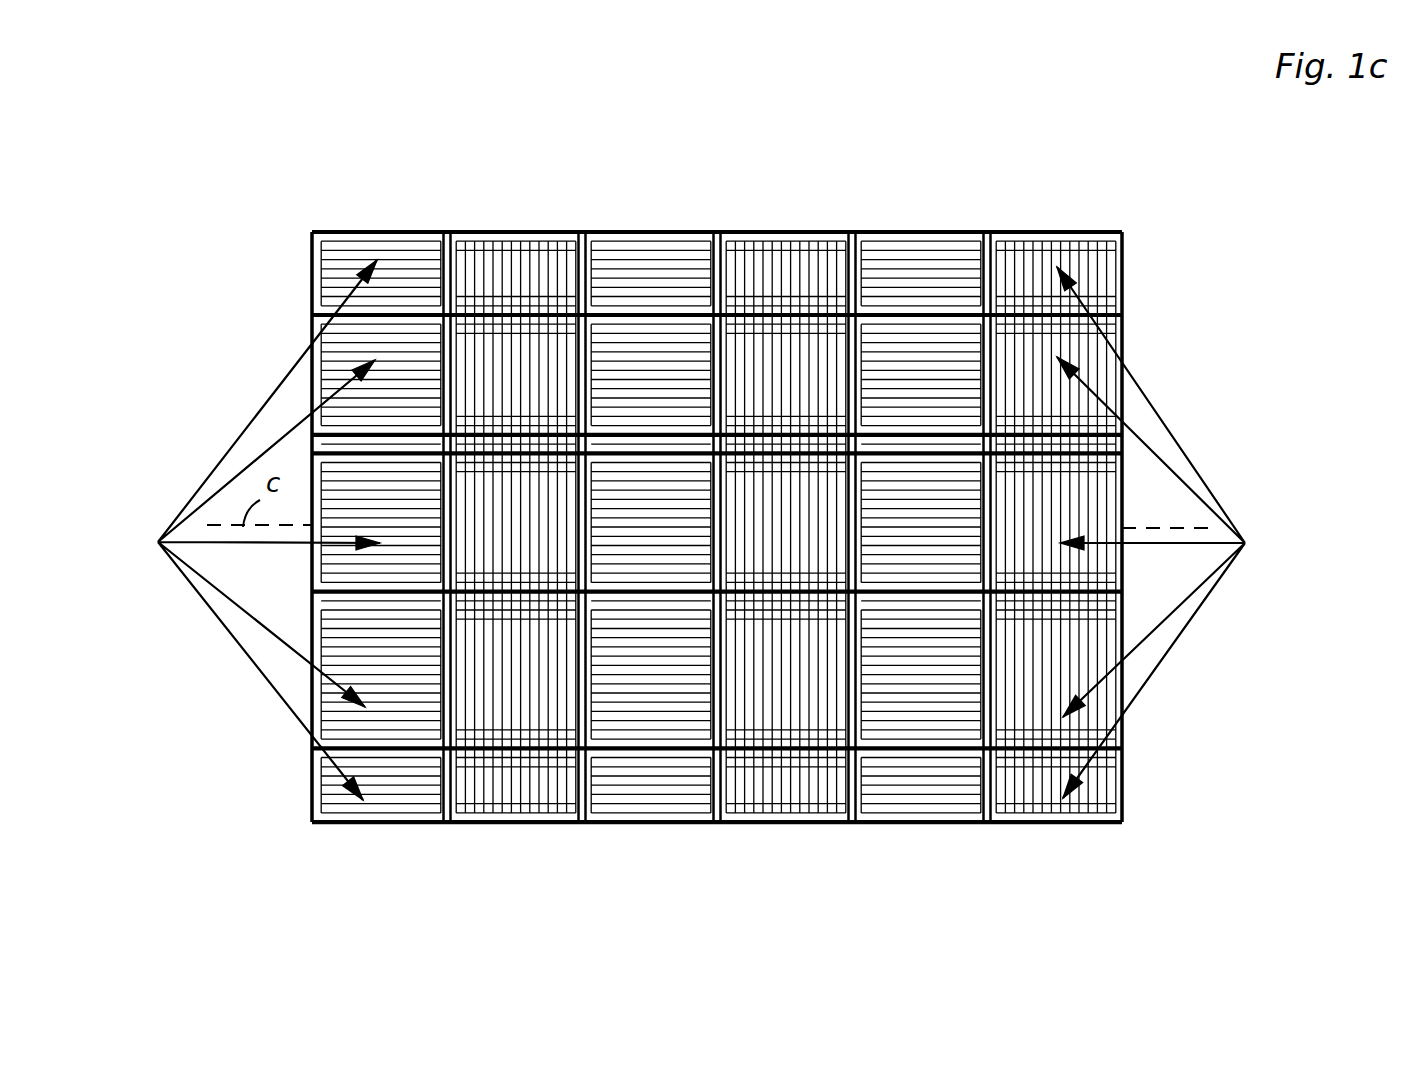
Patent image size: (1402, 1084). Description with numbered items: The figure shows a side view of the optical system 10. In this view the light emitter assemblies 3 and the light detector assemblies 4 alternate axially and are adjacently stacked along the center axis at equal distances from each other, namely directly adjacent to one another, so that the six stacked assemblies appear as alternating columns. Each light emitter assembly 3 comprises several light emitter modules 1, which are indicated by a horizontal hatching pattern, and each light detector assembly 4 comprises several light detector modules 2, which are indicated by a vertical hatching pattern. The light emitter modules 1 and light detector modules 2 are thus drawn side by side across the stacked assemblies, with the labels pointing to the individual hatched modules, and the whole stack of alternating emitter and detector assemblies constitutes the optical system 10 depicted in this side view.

The light emitter module 1 is at (158, 542).
The light detector module 2 is at (1323, 581).
The light emitter assembly 3 is at (372, 180).
The light detector assembly 4 is at (510, 180).
The optical system 10 is at (717, 508).